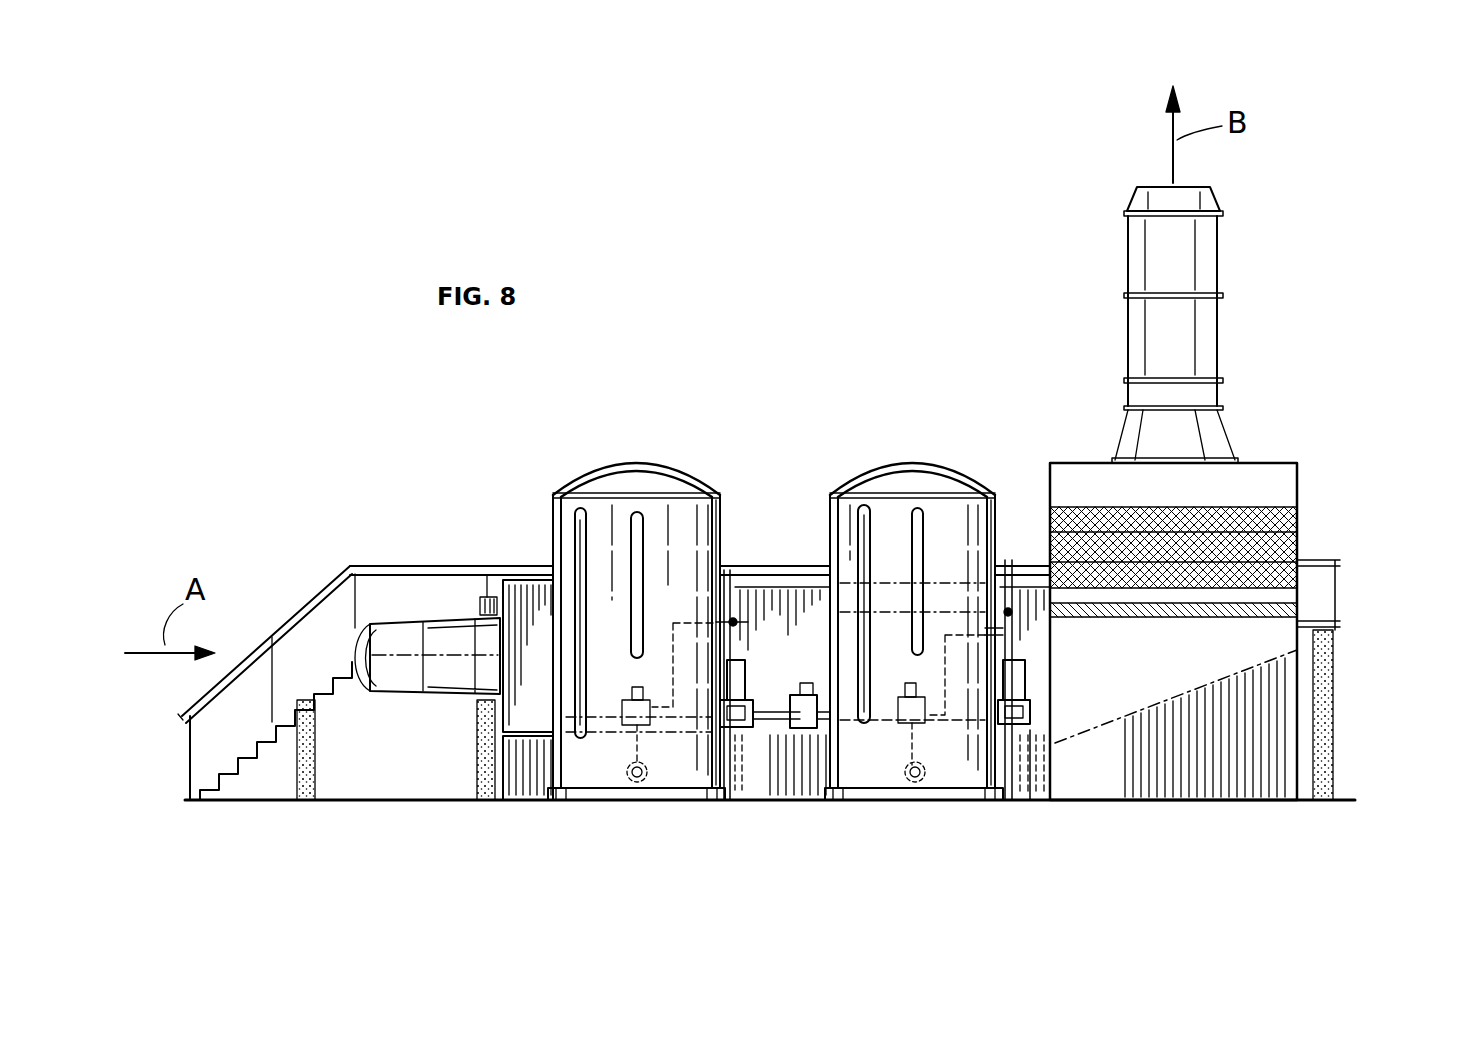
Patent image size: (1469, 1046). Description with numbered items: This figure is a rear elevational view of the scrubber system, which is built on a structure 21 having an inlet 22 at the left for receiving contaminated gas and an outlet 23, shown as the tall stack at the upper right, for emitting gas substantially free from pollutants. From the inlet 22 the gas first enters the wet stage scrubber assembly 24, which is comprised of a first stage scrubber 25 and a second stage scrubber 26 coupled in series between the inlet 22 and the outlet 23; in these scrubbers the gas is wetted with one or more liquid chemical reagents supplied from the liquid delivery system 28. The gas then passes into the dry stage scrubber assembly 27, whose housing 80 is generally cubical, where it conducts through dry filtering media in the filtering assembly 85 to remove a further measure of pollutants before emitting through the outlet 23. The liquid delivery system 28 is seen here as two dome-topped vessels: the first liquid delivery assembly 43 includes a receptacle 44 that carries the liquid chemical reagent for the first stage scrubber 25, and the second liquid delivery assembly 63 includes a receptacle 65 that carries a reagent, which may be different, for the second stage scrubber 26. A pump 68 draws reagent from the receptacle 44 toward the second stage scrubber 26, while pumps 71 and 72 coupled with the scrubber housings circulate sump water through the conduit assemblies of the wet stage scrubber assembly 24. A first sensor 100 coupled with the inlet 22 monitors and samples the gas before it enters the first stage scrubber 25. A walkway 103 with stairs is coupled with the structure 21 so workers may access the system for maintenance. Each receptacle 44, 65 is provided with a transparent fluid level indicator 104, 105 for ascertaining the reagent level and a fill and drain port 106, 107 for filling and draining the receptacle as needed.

The structure 21 is at (1298, 466).
The inlet 22 is at (430, 670).
The outlet 23 is at (1188, 330).
The wet stage scrubber assembly 24 is at (768, 568).
The first stage scrubber 25 is at (538, 764).
The second stage scrubber 26 is at (1020, 765).
The dry stage scrubber assembly 27 is at (1282, 735).
The liquid delivery system 28 is at (663, 470).
The first liquid delivery assembly 43 is at (577, 487).
The receptacle 44 is at (718, 500).
The second liquid delivery assembly 63 is at (982, 492).
The receptacle 65 is at (862, 485).
The pump 68 is at (800, 735).
The pump 71 is at (1020, 686).
The pump 72 is at (748, 690).
The housing 80 is at (1237, 480).
The filtering assembly 85 is at (1280, 551).
The first sensor 100 is at (478, 605).
The walkway 103 is at (307, 652).
The transparent fluid level indicator 104 is at (598, 545).
The transparent fluid level indicator 105 is at (903, 545).
The fill and drain port 106 is at (643, 590).
The fill and drain port 107 is at (921, 540).